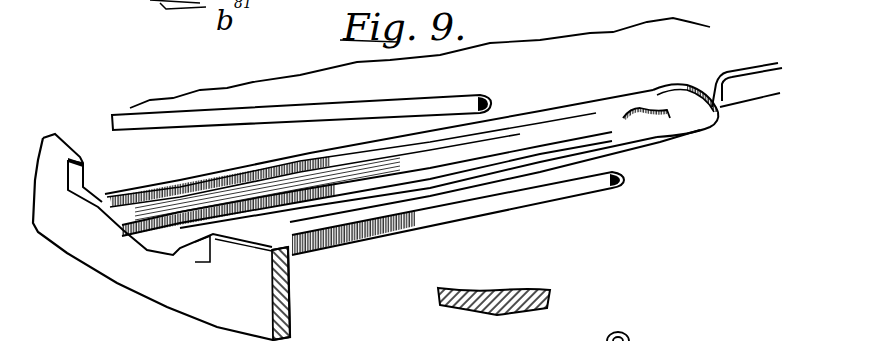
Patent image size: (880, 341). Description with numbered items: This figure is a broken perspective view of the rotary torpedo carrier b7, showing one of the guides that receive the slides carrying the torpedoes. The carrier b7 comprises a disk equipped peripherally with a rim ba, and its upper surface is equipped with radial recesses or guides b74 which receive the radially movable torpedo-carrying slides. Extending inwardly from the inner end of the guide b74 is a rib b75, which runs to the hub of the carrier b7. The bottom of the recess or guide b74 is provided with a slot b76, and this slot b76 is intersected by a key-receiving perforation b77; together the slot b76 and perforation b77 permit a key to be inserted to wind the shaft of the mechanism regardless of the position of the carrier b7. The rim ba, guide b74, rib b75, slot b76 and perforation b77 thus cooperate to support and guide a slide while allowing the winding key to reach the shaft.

The rim ba is at (296, 301).
The radial recesses or guides b74 is at (339, 99).
The rotary carrier b7 is at (458, 243).
The slots b76 is at (628, 96).
The key-receiving perforations b77 is at (680, 87).
The ribs b75 is at (747, 65).